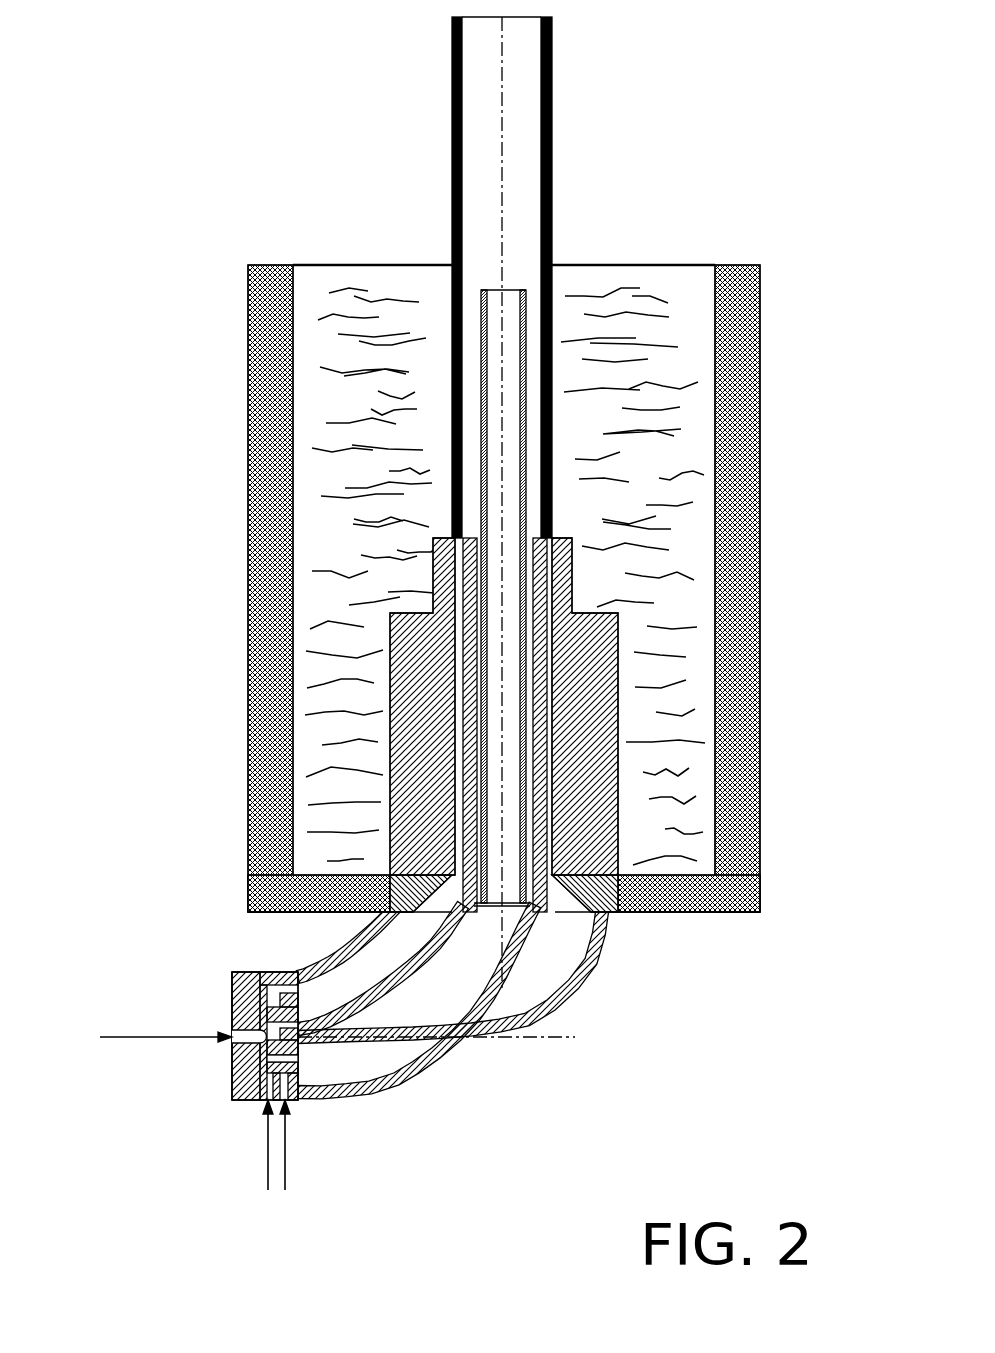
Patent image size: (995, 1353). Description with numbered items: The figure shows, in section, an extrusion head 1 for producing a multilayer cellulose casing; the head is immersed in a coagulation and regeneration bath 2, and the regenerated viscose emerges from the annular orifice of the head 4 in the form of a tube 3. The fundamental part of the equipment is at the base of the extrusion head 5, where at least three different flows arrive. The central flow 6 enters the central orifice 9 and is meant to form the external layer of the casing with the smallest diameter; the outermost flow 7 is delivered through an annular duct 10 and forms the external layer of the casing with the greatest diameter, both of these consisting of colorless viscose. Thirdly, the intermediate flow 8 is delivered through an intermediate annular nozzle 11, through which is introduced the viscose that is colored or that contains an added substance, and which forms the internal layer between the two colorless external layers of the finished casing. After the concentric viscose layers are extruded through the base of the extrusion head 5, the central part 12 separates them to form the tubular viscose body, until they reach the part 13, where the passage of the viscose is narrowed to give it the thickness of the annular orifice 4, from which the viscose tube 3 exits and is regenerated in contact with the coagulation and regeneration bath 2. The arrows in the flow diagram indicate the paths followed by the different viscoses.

The extrusion head 1 is at (597, 672).
The coagulation and regeneration bath 2 is at (632, 318).
The tube of regenerated viscose 3 is at (553, 40).
The annular orifice of the head 4 is at (560, 530).
The base of the extrusion head 5 is at (232, 1077).
The central flow 6 is at (226, 1038).
The outermost flow 7 is at (286, 1147).
The intermediate flow 8 is at (268, 1170).
The central orifice 9 is at (233, 1033).
The annular duct 10 is at (330, 1100).
The intermediate annular nozzle 11 is at (297, 1060).
The central part 12 is at (467, 997).
The narrowing part 13 is at (615, 903).